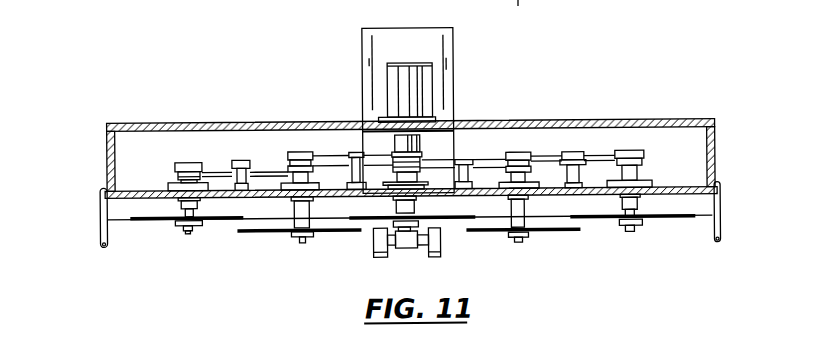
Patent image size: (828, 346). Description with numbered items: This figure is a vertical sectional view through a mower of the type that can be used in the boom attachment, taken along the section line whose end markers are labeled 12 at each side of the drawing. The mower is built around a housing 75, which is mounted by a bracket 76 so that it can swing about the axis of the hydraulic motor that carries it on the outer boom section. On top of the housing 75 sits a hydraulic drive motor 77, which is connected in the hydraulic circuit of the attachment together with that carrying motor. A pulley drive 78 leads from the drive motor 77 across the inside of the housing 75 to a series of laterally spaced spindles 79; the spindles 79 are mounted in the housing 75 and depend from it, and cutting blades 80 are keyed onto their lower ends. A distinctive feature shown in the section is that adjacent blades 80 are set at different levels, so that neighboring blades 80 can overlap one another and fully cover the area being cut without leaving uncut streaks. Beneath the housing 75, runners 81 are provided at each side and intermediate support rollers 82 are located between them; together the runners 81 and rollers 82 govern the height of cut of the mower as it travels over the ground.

The section line 12- 12 is at (70, 99).
The housing 75 is at (516, 121).
The bracket 76 is at (424, 48).
The hydraulic drive motor 77 is at (396, 85).
The pulley drive 78 is at (266, 170).
The spindles 79 is at (185, 207).
The blades 80 is at (220, 223).
The runners 81 is at (100, 237).
The intermediate support rollers 82 is at (380, 257).